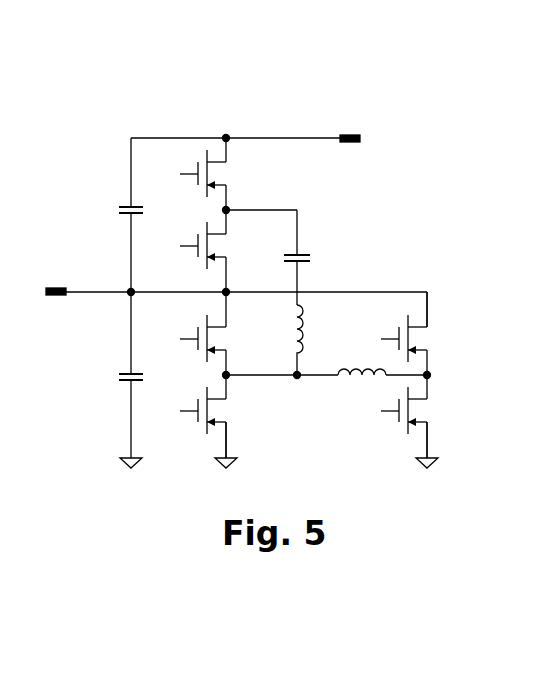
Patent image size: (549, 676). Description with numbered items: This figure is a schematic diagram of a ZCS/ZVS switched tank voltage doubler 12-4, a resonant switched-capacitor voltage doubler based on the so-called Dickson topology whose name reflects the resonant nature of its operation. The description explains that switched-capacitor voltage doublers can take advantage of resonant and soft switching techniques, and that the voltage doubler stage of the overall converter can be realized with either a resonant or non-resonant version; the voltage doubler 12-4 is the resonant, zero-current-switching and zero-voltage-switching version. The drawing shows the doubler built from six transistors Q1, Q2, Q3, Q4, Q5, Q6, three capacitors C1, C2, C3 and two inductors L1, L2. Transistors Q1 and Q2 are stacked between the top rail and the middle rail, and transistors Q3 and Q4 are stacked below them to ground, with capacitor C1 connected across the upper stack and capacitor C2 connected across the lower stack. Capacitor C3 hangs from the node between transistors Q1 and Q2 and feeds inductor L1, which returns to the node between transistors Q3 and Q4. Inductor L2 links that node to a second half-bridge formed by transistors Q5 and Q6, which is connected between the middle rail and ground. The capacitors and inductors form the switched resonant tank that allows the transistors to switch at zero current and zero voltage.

The ZCS/ZVS switched tank voltage doubler 12-4 is at (171, 83).
The capacitor C1 is at (114, 215).
The capacitor C2 is at (114, 339).
The flying capacitor C3 is at (311, 257).
The inductor L1 is at (319, 340).
The inductor L2 is at (362, 386).
The transistor Q1 is at (218, 174).
The transistor Q2 is at (218, 251).
The transistor Q3 is at (218, 333).
The transistor Q4 is at (218, 416).
The transistor Q5 is at (419, 333).
The transistor Q6 is at (421, 416).